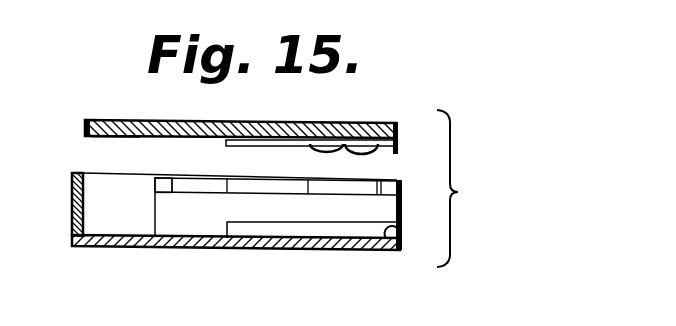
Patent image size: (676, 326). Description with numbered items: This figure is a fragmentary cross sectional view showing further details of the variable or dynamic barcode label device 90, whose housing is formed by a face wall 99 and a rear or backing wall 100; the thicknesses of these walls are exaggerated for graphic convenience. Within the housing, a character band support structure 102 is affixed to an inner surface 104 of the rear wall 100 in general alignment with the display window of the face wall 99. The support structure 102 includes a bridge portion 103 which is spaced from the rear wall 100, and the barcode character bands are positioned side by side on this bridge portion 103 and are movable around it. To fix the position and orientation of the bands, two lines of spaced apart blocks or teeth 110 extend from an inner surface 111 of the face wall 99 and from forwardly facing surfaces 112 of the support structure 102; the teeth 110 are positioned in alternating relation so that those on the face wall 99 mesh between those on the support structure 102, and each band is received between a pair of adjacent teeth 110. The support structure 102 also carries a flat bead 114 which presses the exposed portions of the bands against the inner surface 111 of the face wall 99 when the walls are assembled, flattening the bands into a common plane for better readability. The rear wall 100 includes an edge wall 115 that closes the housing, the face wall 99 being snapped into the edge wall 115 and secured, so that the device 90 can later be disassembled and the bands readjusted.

The variable barcode label device 90 is at (56, 130).
The face wall 99 is at (136, 120).
The rear wall 100 is at (133, 247).
The character band support structure 102 is at (163, 218).
The bridge portion 103 is at (390, 210).
The inner surface 104 is at (399, 232).
The teeth 110 is at (344, 141).
The inner surface 111 is at (118, 137).
The forwardly facing surfaces 112 is at (173, 180).
The flat bead 114 is at (293, 181).
The edge wall 115 is at (73, 210).